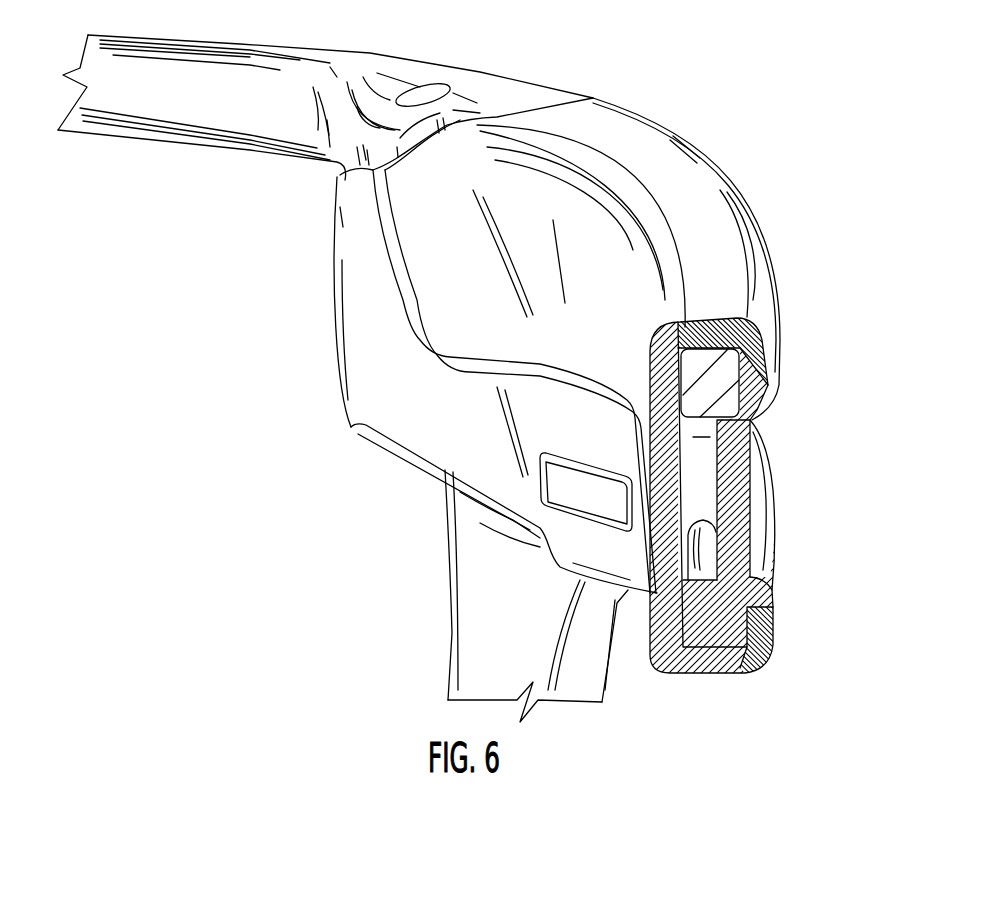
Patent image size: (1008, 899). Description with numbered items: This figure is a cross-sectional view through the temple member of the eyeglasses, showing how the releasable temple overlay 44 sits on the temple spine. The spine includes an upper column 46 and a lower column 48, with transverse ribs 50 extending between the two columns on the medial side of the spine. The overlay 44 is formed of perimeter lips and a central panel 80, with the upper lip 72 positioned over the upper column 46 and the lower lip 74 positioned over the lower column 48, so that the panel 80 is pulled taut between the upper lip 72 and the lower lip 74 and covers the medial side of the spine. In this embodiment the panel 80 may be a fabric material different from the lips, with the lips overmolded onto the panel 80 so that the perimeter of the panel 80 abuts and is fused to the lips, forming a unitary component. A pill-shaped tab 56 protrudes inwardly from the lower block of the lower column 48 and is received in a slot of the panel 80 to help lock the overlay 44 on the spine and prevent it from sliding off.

The releasable temple overlay 44 is at (428, 410).
The upper column 46 is at (715, 388).
The lower column 48 is at (728, 612).
The transverse ribs 50 is at (740, 472).
The pill-shaped tab 56 is at (580, 492).
The upper lip 72 is at (745, 350).
The lower lip 74 is at (748, 672).
The panel 80 is at (684, 533).